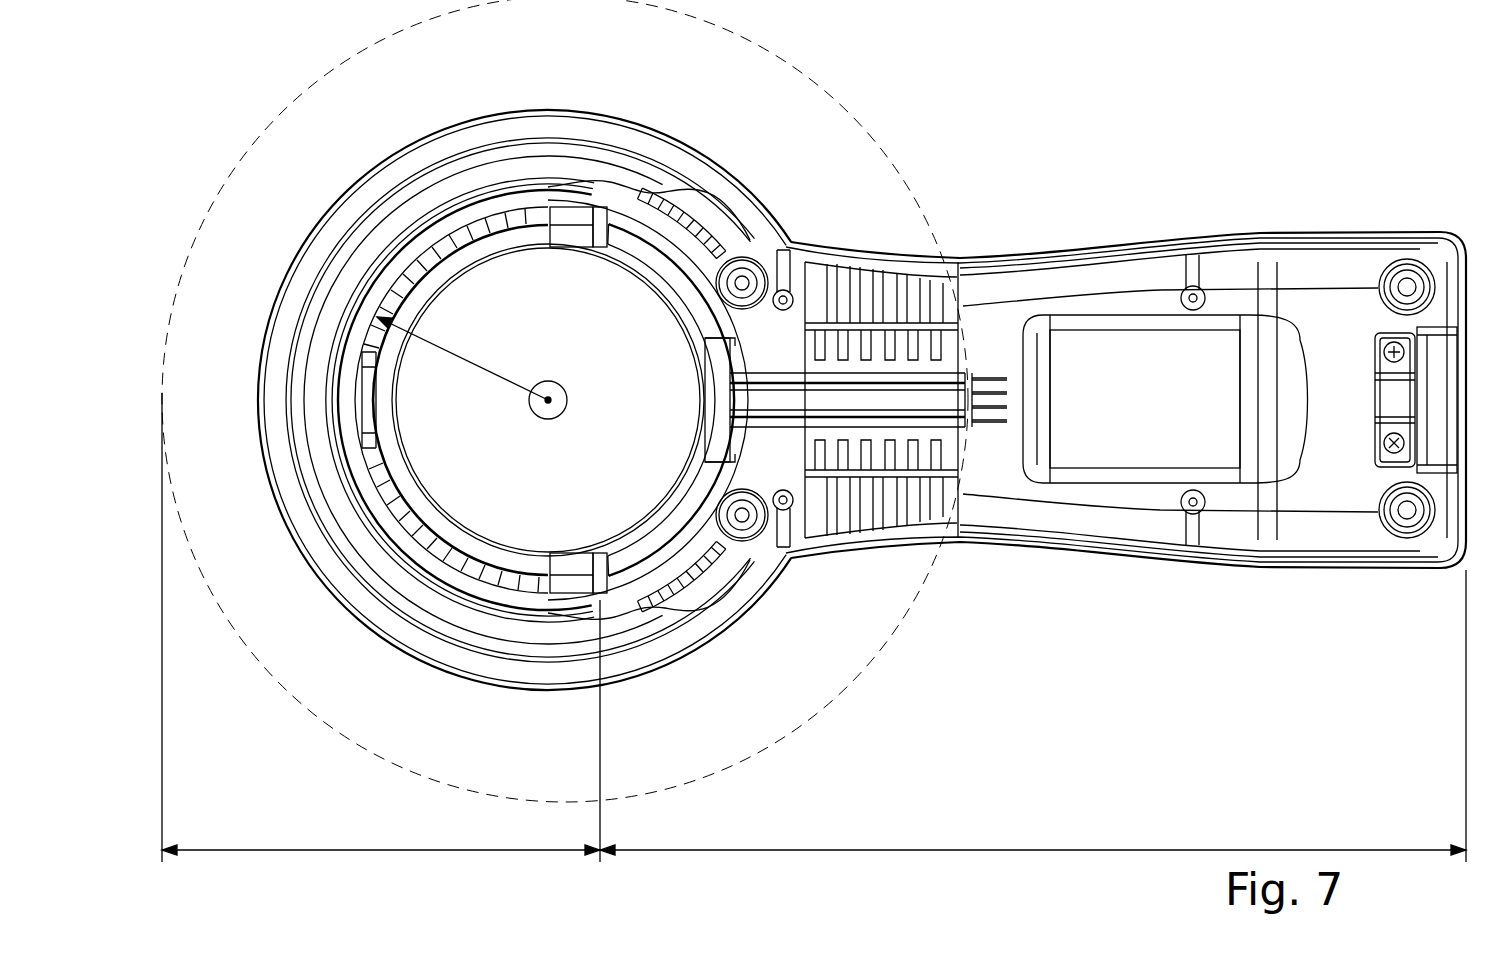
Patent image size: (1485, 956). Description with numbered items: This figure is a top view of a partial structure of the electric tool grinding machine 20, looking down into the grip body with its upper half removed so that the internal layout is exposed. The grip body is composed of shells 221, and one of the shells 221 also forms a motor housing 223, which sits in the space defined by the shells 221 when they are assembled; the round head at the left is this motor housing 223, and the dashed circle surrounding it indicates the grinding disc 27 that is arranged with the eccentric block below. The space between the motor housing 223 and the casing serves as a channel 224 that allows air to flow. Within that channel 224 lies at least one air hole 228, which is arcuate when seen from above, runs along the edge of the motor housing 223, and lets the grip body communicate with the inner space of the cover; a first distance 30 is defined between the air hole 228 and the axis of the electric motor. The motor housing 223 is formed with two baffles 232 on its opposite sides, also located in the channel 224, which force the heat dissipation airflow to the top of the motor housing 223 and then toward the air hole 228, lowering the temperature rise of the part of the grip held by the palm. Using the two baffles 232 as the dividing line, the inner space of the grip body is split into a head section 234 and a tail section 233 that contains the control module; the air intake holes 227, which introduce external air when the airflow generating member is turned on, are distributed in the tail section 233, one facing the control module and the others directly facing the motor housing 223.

The electric tool grinding machine 20 is at (1322, 102).
The grinding disc 27 is at (815, 727).
The first distance 30 is at (458, 353).
The shells 221 is at (335, 425).
The motor housing 223 is at (475, 487).
The channel 224 is at (363, 390).
The air intake holes 227 is at (710, 230).
The air hole 228 is at (383, 290).
The baffles 232 is at (600, 240).
The tail section 233 is at (1033, 716).
The head section 234 is at (381, 627).